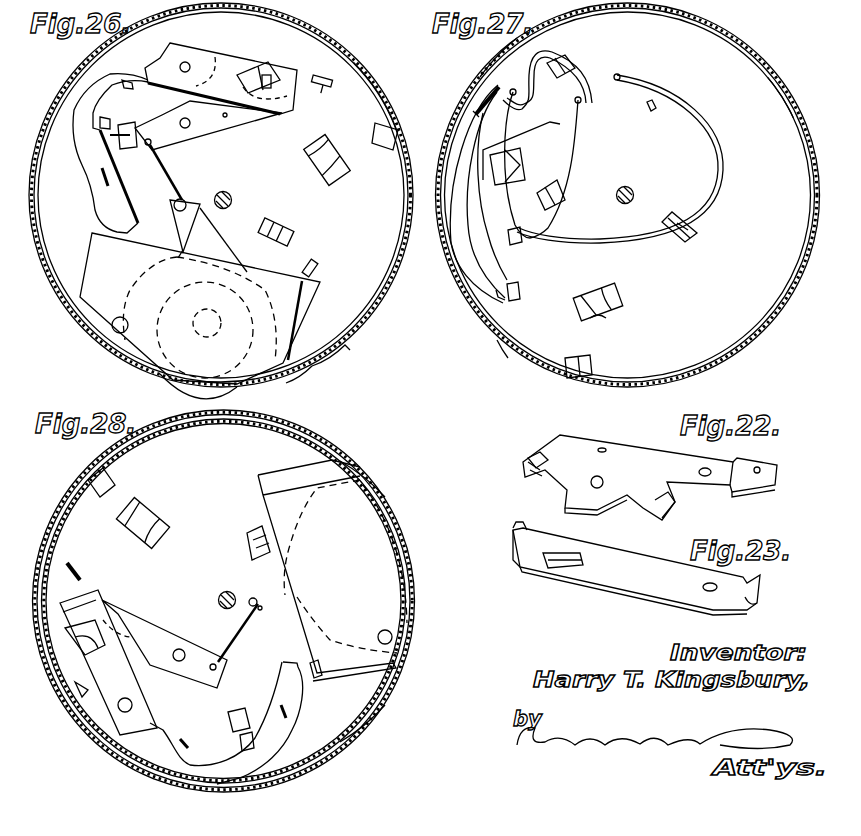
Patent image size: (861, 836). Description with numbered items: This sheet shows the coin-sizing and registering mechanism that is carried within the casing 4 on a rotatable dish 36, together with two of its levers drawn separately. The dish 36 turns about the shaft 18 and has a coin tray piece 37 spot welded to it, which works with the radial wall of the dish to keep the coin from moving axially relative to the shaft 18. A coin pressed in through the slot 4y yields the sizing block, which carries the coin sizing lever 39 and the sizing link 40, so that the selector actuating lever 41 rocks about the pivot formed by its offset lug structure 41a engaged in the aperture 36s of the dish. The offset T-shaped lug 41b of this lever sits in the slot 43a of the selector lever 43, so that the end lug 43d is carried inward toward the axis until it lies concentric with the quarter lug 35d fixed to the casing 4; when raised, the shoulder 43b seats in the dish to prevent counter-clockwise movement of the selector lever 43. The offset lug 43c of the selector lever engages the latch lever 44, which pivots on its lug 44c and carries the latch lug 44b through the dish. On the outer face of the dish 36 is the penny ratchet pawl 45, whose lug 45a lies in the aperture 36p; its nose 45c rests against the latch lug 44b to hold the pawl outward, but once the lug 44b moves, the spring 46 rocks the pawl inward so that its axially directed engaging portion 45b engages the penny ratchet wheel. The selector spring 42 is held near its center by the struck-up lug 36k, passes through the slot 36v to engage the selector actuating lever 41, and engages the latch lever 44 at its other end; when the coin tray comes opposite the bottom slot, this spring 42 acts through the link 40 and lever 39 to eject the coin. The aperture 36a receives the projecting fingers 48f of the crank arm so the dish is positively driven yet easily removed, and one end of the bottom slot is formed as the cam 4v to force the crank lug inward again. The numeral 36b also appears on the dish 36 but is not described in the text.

In FIG. 26, the casing 4 is at (308, 34).
In FIG. 27, the casing 4 is at (729, 42).
In FIG. 28, the casing 4 is at (310, 433).
In FIG. 26, the slot 4y is at (357, 64).
In FIG. 27, the slot 4y is at (497, 54).
In FIG. 28, the slot 4y is at (355, 474).
In FIG. 28, the cam 4v is at (353, 758).
In FIG. 26, the shaft 18 is at (231, 197).
In FIG. 27, the shaft 18 is at (630, 187).
In FIG. 28, the shaft 18 is at (220, 595).
In FIG. 26, the quarter lug 35d is at (313, 264).
In FIG. 28, the quarter lug 35d is at (313, 660).
In FIG. 27, the dish 36 is at (744, 79).
In FIG. 27, the aperture 36a is at (598, 322).
In FIG. 27, the frame lug 36b is at (594, 367).
In FIG. 26, the struck-up lug 36k is at (282, 222).
In FIG. 27, the struck-up lug 36k is at (682, 216).
In FIG. 27, the aperture 36p is at (516, 289).
In FIG. 27, the aperture 36s is at (530, 152).
In FIG. 27, the slot 36v is at (540, 190).
In FIG. 26, the coin tray piece 37 is at (200, 316).
In FIG. 28, the coin tray piece 37 is at (332, 570).
In FIG. 26, the coin sizing lever 39 is at (192, 200).
In FIG. 28, the coin sizing lever 39 is at (262, 592).
In FIG. 26, the sizing link 40 is at (168, 170).
In FIG. 26, the selector actuating lever 41 is at (212, 118).
In FIG. 27, the selector actuating lever 41 is at (596, 233).
In FIG. 28, the selector actuating lever 41 is at (208, 626).
In FIG. 22, the selector actuating lever 41 is at (646, 433).
In FIG. 22, the offset lug structure 41a is at (728, 516).
In FIG. 22, the offset T-shaped lug 41b is at (545, 454).
In FIG. 27, the selector spring 42 is at (712, 128).
In FIG. 23, the selector lever 43 is at (640, 573).
In FIG. 26, the slot 43a is at (250, 72).
In FIG. 23, the slot 43a is at (560, 568).
In FIG. 23, the shoulder 43b is at (525, 566).
In FIG. 23, the offset lug 43c is at (755, 597).
In FIG. 23, the end lug 43d is at (517, 527).
In FIG. 26, the latch lever 44 is at (89, 155).
In FIG. 28, the latch lever 44 is at (326, 741).
In FIG. 27, the latch lug 44b is at (625, 68).
In FIG. 27, the lug 44c is at (685, 136).
In FIG. 26, the penny ratchet pawl 45 is at (196, 53).
In FIG. 27, the penny ratchet pawl 45 is at (478, 253).
In FIG. 28, the penny ratchet pawl 45 is at (190, 715).
In FIG. 26, the lug 45a is at (323, 92).
In FIG. 27, the lug 45a is at (500, 301).
In FIG. 28, the lug 45a is at (78, 568).
In FIG. 27, the axially directed engaging portion 45b is at (489, 91).
In FIG. 27, the nose 45c is at (564, 58).
In FIG. 27, the spring 46 is at (582, 147).
In FIG. 26, the projecting fingers 48f is at (315, 160).
In FIG. 27, the projecting fingers 48f is at (605, 292).
In FIG. 28, the projecting fingers 48f is at (153, 531).